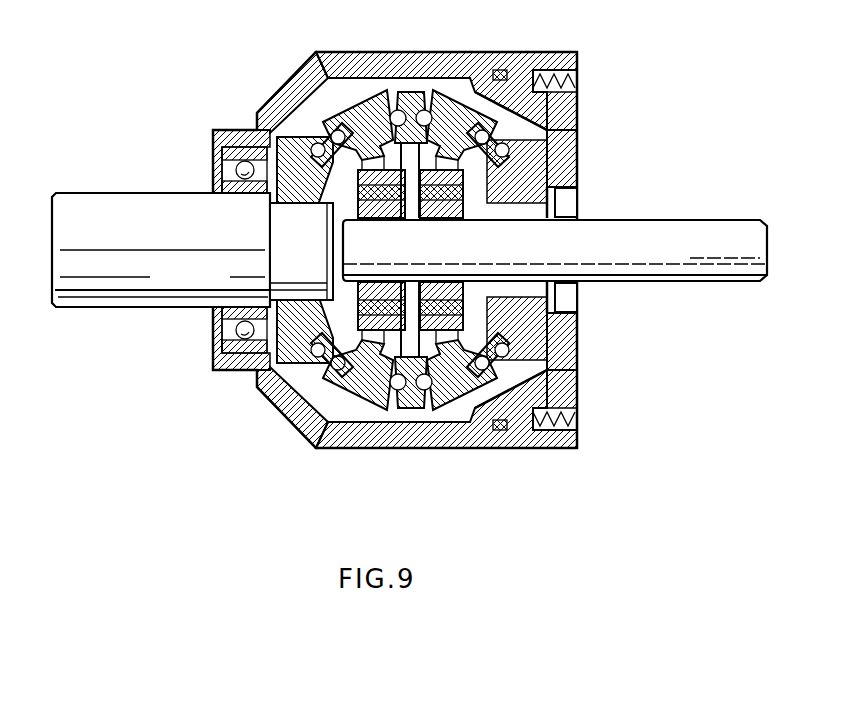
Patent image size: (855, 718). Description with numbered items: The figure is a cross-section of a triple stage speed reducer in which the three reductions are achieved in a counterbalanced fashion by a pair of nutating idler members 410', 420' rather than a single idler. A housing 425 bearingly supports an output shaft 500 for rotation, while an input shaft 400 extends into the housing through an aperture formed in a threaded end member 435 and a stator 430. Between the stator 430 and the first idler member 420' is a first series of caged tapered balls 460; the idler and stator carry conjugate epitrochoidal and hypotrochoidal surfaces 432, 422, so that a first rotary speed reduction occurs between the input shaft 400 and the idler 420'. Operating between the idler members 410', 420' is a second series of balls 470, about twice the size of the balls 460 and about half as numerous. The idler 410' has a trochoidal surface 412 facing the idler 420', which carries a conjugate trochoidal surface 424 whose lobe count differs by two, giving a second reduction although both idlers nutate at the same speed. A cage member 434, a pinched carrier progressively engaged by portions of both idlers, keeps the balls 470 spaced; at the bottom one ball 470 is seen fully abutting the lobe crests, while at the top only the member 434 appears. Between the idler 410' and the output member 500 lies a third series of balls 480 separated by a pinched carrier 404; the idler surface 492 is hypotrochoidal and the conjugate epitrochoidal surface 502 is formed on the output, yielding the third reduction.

The input shaft 400 is at (690, 235).
The pinched carrier 404 is at (303, 385).
The nutating idler member 410' is at (381, 210).
The trochoidal surface 412 is at (396, 410).
The nutating idler member 420' is at (451, 210).
The hypotrochoidal surface 422 is at (490, 100).
The conjugate trochoidal surface 424 is at (457, 405).
The housing 425 is at (460, 62).
The stator 430 is at (580, 197).
The epitrochoidal surface 432 is at (490, 158).
The cage member 434 is at (404, 88).
The threaded end member 435 is at (570, 110).
The first series of caged tapered balls 460 is at (572, 128).
The second series of balls 470 is at (433, 372).
The third series of balls 480 is at (317, 133).
The hypotrochoidal surface 492 is at (297, 440).
The output shaft 500 is at (182, 210).
The epitrochoidal surface 502 is at (262, 398).